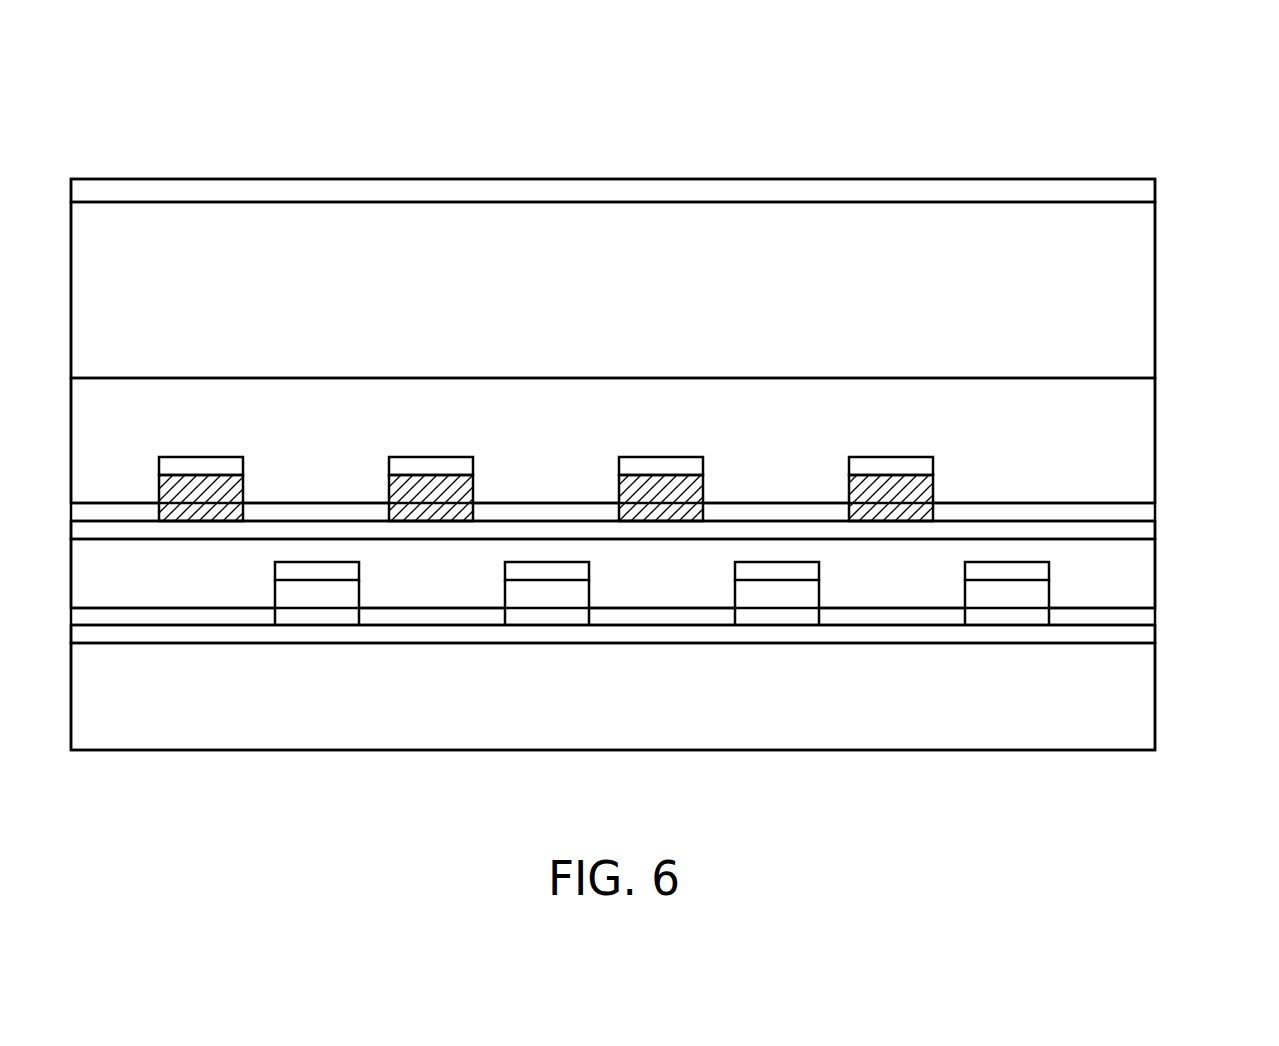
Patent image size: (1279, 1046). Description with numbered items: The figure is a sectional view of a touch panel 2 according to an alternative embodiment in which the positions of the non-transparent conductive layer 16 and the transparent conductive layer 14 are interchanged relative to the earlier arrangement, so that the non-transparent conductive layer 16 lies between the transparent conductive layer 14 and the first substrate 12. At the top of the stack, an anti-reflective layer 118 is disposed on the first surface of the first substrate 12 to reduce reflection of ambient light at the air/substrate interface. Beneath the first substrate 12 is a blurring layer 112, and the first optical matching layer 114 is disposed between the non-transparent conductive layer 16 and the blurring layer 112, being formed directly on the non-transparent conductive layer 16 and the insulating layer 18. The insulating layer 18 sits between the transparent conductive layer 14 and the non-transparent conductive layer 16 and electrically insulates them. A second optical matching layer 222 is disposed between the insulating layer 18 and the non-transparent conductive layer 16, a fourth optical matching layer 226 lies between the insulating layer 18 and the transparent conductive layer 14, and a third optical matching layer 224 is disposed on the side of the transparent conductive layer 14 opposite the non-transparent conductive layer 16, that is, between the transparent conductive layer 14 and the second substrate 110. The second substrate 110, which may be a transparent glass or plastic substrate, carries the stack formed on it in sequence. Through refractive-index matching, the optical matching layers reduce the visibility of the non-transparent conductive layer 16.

The touch panel 2 is at (1092, 93).
The anti-reflective layer 118 is at (1148, 191).
The first substrate 12 is at (1148, 293).
The blurring layer 112 is at (1148, 410).
The first optical matching layer 114 is at (925, 470).
The non-transparent conductive layer 16 is at (934, 488).
The second optical matching layer 222 is at (1147, 528).
The insulating layer 18 is at (1146, 552).
The transparent conductive layer 14 is at (1040, 590).
The fourth optical matching layer 226 is at (977, 571).
The third optical matching layer 224 is at (1143, 636).
The second substrate 110 is at (1148, 708).